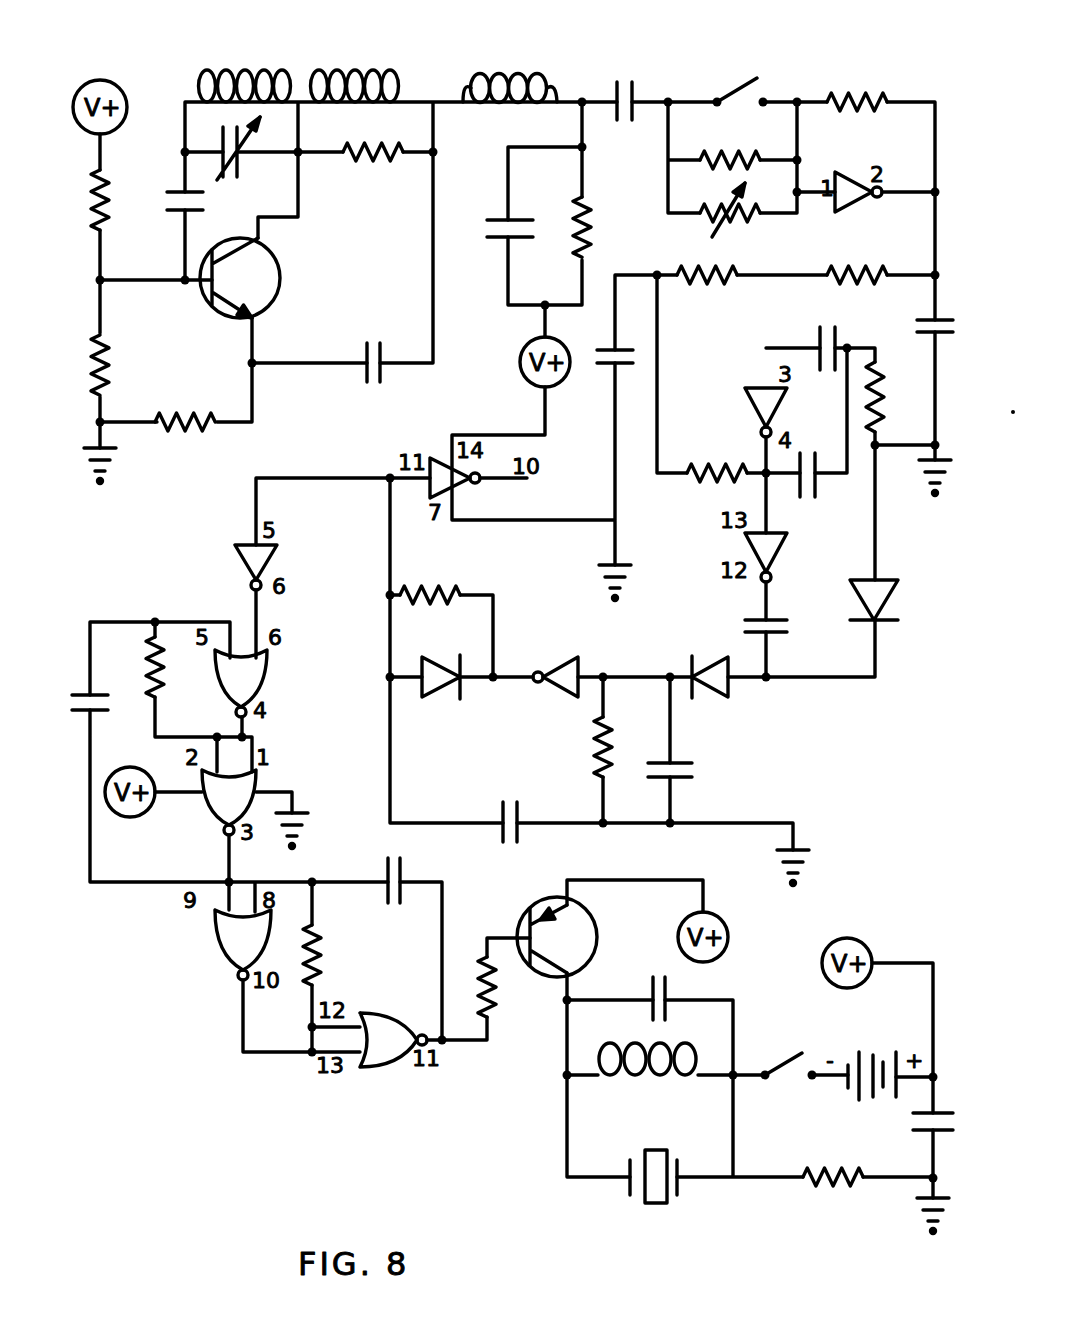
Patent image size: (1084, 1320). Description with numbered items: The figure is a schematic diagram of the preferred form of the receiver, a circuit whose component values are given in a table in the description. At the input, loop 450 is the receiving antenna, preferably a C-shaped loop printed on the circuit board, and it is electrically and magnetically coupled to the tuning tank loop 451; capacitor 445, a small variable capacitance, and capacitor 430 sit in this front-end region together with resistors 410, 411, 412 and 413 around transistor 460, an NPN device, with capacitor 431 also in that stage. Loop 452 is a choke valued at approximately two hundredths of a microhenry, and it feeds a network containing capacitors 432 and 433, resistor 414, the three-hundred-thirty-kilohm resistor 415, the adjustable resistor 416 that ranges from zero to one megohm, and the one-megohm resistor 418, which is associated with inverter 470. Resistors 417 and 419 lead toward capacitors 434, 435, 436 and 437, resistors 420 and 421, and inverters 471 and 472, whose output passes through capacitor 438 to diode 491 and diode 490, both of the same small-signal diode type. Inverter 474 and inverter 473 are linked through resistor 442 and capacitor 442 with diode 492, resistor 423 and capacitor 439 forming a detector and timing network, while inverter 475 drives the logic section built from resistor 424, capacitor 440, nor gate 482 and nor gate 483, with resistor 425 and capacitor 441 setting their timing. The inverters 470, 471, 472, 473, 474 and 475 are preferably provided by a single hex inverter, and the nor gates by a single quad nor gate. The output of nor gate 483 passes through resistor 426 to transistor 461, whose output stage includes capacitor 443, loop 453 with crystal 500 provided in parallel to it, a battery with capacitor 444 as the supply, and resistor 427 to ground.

The resistor 410 is at (102, 228).
The resistor 411 is at (108, 362).
The resistor 412 is at (184, 428).
The resistor 413 is at (396, 155).
The resistor 414 is at (583, 200).
The resistor 415 is at (776, 158).
The variable resistor 416 is at (736, 220).
The resistor 417 is at (682, 277).
The resistor 418 is at (830, 99).
The resistor 419 is at (829, 274).
The resistor 420 is at (922, 370).
The resistor 421 is at (738, 470).
The resistor 423 is at (602, 732).
The resistor 424 is at (140, 640).
The resistor 425 is at (318, 960).
The resistor 426 is at (488, 1018).
The resistor 427 is at (816, 1186).
The capacitor 430 is at (183, 190).
The capacitor 431 is at (367, 345).
The capacitor 432 is at (500, 240).
The capacitor 433 is at (617, 82).
The capacitor 434 is at (926, 318).
The capacitor 435 is at (852, 310).
The capacitor 436 is at (612, 366).
The capacitor 437 is at (785, 490).
The capacitor 438 is at (750, 618).
The capacitor 439 is at (694, 768).
The capacitor 440 is at (84, 695).
The capacitor 441 is at (404, 878).
The capacitor 442 is at (418, 590).
The capacitor 443 is at (666, 990).
The capacitor 444 is at (912, 1128).
The capacitor 445 is at (218, 178).
The loop 450 is at (225, 70).
The tuning tank loop 451 is at (365, 70).
The loop 452 is at (498, 73).
The loop 453 is at (612, 1082).
The transistor 460 is at (276, 256).
The transistor 461 is at (597, 925).
The inverter 470 is at (832, 170).
The inverter 471 is at (758, 385).
The inverter 472 is at (758, 540).
The inverter 473 is at (546, 657).
The inverter 474 is at (441, 455).
The inverter 475 is at (248, 545).
The nor gate 482 is at (238, 976).
The nor gate 483 is at (392, 1066).
The diode 490 is at (871, 625).
The diode 491 is at (708, 696).
The diode 492 is at (462, 684).
The crystal 500 is at (650, 1205).